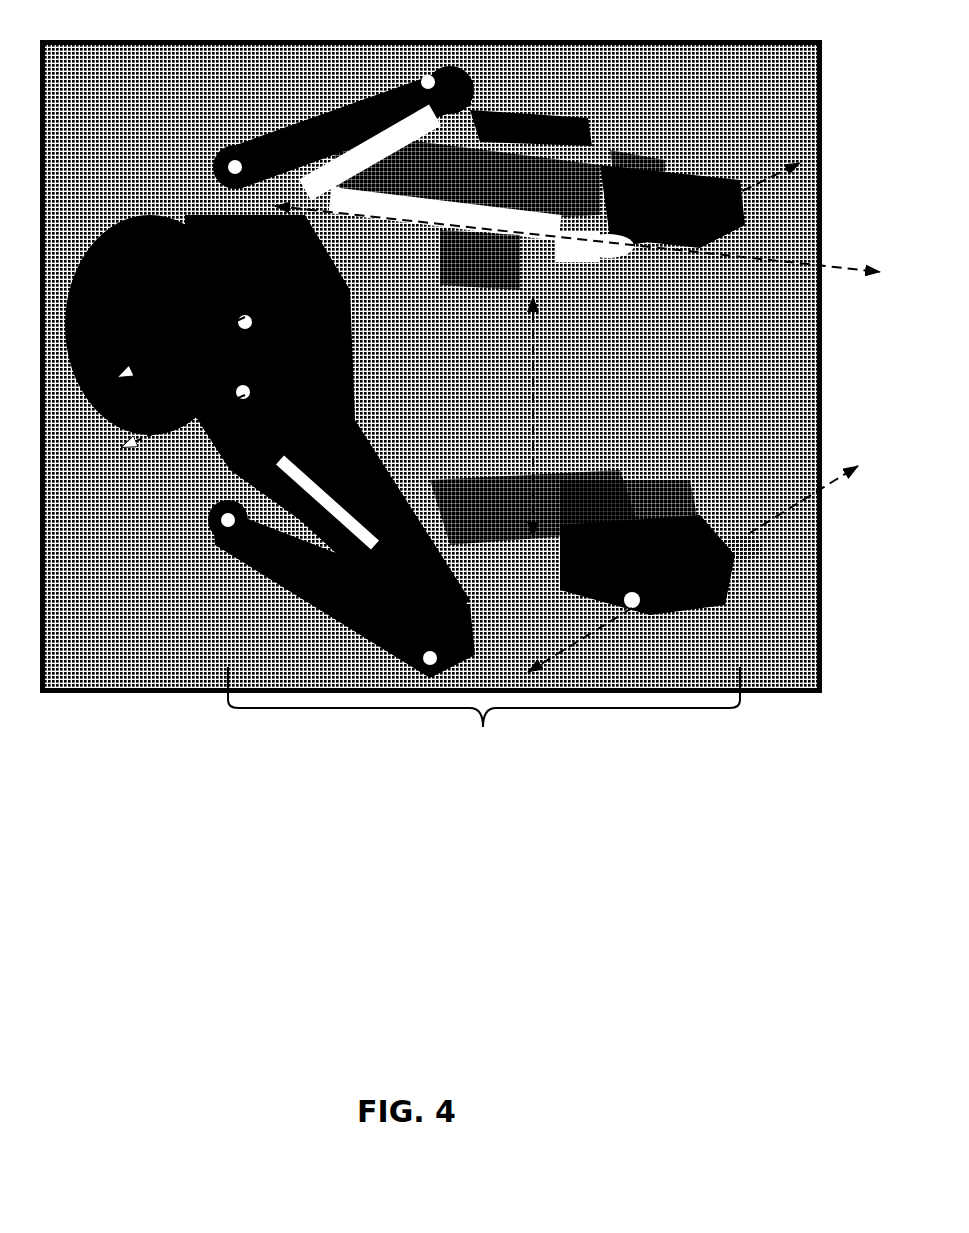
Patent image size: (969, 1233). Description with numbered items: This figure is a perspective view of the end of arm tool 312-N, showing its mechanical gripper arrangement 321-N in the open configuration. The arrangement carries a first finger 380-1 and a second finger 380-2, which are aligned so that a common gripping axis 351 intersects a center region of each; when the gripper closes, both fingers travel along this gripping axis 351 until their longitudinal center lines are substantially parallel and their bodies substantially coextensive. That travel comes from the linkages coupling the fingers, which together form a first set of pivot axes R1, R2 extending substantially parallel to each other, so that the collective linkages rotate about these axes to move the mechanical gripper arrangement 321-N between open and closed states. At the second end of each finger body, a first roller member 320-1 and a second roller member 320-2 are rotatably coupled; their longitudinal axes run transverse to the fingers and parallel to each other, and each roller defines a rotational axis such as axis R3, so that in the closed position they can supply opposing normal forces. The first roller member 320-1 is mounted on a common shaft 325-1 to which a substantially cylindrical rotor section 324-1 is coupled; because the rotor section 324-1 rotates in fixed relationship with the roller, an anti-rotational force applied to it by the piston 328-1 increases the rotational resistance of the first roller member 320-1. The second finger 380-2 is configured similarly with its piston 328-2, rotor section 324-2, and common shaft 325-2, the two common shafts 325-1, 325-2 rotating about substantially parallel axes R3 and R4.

The end of arm tool 312-N is at (176, 74).
The mechanical gripper arrangement 321-N is at (457, 816).
The first roller member 320-1 is at (718, 195).
The second roller member 320-2 is at (695, 553).
The rotor section 324-1 is at (630, 254).
The rotor section 324-2 is at (745, 548).
The common shaft 325-1 is at (635, 214).
The common shaft 325-2 is at (645, 606).
The piston 328-1 is at (578, 250).
The piston 328-2 is at (680, 528).
The first finger 380-1 is at (645, 150).
The second finger 380-2 is at (727, 596).
The gripping axis 351 is at (534, 395).
The pivot axis R1 is at (181, 347).
The pivot axis R2 is at (183, 421).
The rotational axis R3 is at (762, 193).
The rotational axis R4 is at (612, 645).